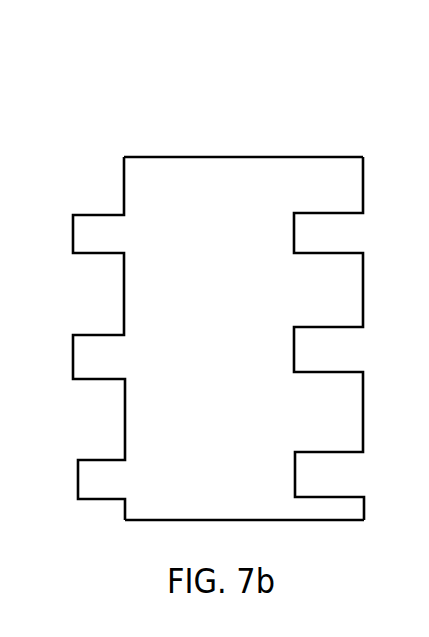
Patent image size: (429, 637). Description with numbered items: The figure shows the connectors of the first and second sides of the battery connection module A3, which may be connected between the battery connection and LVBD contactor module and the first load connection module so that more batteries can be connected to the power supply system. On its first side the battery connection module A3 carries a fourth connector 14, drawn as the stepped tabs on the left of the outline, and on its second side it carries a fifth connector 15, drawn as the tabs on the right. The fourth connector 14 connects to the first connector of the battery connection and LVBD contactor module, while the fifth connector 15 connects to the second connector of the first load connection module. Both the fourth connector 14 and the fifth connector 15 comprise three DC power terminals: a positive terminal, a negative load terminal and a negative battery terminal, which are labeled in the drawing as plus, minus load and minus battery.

The fourth connector 14 is at (85, 108).
The fifth connector 15 is at (349, 126).
The battery connection module A3 is at (195, 178).